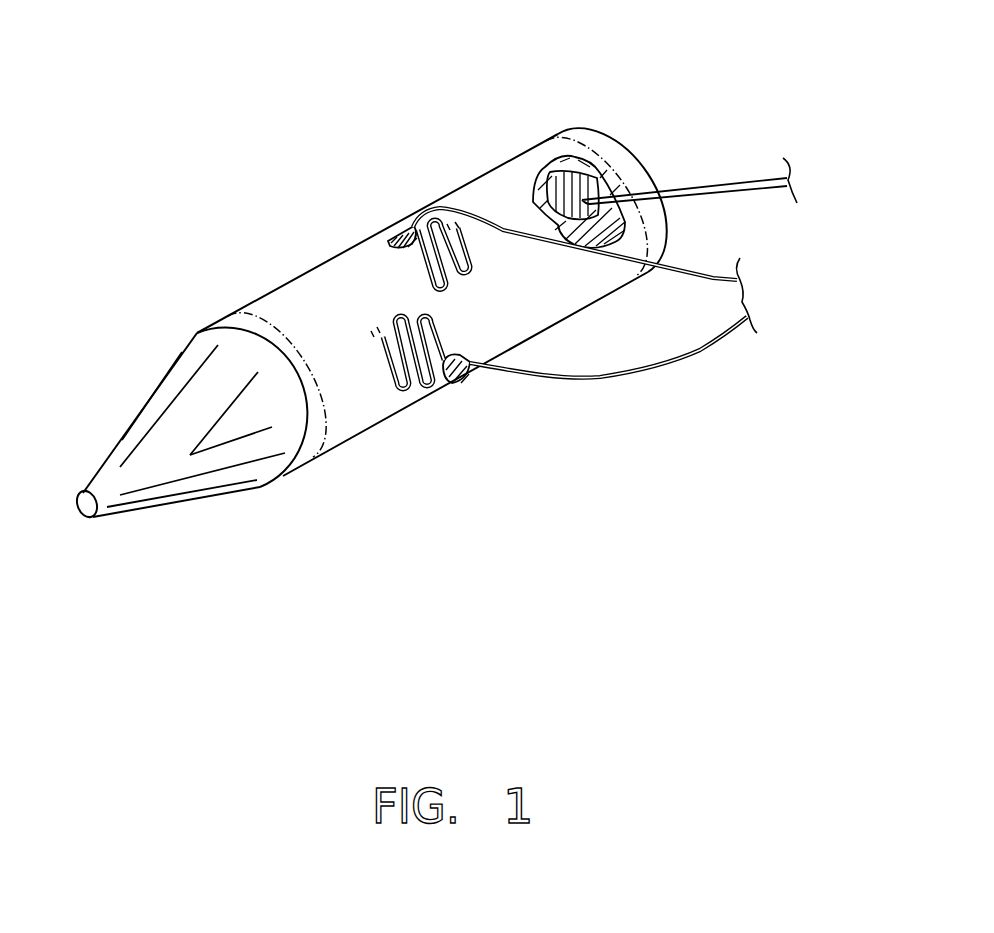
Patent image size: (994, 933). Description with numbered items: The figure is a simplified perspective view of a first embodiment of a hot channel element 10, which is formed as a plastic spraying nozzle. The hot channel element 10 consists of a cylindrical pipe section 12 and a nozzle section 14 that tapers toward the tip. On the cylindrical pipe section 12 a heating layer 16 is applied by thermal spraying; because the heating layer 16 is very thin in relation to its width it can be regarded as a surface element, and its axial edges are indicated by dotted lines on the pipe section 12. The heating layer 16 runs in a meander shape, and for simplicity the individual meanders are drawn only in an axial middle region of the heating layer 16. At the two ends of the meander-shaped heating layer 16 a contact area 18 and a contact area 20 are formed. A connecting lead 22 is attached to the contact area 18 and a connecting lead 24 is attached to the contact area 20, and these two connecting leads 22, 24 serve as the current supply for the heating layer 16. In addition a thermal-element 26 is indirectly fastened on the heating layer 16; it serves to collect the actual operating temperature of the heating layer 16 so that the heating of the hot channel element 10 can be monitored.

The hot channel element 10 is at (211, 103).
The cylindrical pipe section 12 is at (500, 162).
The nozzle section 14 is at (97, 473).
The heating layer 16 is at (323, 403).
The contact area 18 is at (388, 243).
The contact area 20 is at (443, 381).
The connecting lead 22 is at (697, 273).
The connecting lead 24 is at (693, 350).
The thermal-element 26 is at (683, 188).